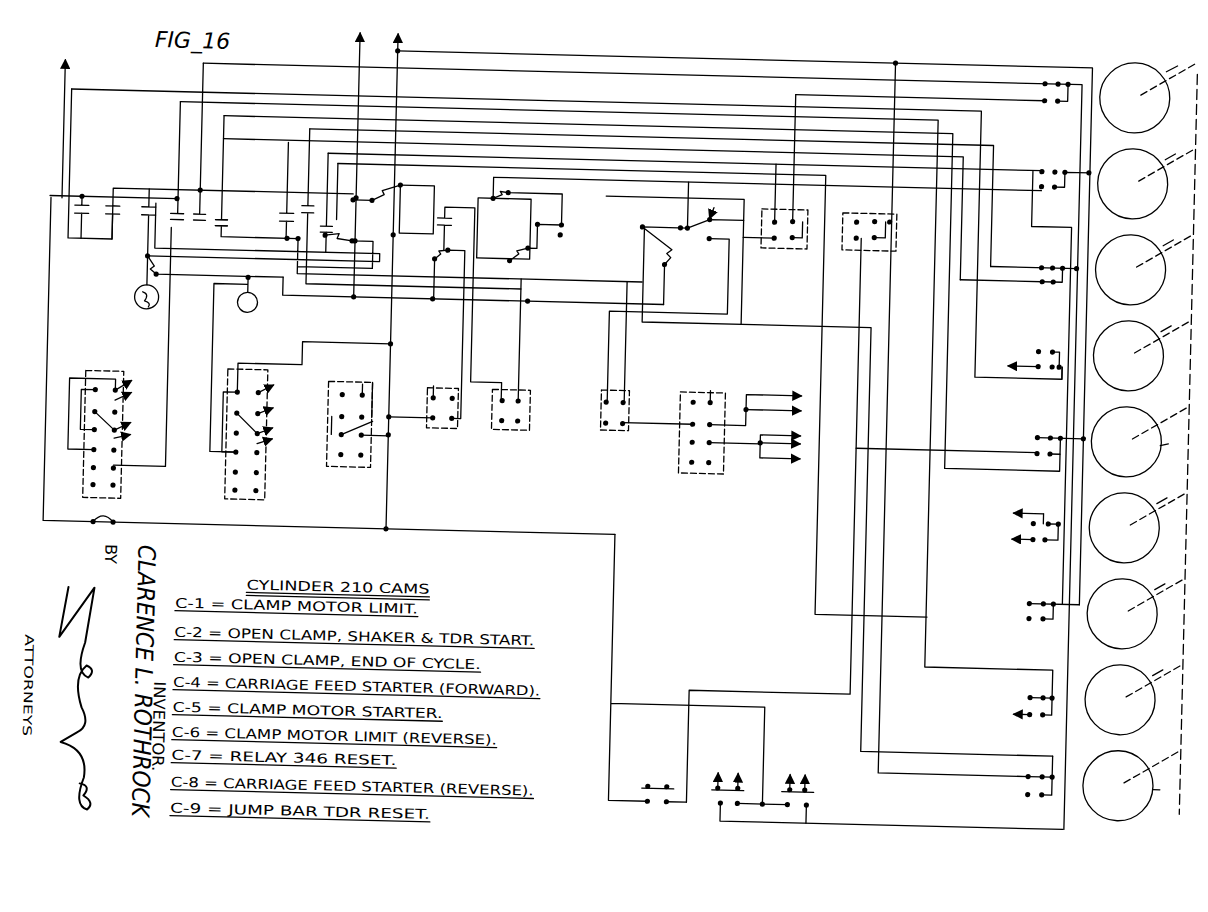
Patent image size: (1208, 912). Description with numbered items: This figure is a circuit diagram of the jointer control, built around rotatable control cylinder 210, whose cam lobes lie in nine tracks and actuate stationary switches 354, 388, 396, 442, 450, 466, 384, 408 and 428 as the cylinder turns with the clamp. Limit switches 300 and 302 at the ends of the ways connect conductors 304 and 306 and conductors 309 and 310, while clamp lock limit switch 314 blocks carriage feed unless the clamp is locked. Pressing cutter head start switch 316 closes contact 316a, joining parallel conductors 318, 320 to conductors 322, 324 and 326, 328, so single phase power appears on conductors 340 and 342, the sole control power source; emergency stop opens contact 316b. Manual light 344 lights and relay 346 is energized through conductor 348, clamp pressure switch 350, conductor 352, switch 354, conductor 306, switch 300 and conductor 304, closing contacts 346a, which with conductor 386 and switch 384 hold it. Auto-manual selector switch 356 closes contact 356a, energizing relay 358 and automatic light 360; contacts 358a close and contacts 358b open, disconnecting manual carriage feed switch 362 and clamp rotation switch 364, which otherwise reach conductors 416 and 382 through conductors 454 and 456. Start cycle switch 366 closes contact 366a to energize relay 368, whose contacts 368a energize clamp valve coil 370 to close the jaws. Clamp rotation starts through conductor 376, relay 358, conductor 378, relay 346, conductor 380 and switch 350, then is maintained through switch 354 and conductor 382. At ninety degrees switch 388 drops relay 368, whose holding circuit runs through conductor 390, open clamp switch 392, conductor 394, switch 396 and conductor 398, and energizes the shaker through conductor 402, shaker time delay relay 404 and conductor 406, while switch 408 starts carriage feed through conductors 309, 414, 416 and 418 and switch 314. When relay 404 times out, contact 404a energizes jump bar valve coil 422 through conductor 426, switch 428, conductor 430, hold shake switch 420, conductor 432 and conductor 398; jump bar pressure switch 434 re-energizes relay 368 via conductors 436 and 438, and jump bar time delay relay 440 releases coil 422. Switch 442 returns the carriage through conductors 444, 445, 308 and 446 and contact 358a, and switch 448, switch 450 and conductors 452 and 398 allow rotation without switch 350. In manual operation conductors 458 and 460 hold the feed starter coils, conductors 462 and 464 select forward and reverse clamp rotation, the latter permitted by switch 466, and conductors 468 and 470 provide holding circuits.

The control cylinder 210 is at (1188, 392).
The limit switch 300 is at (808, 770).
The limit switch 302 is at (722, 806).
The conductor 304 is at (630, 703).
The conductor 306 is at (1072, 125).
The conductor 308 is at (1022, 360).
The conductor 309 is at (708, 760).
The conductor 310 is at (752, 770).
The clamp lock limit switch 314 is at (118, 528).
The cutter head start switch 316 is at (706, 471).
The normally open contact 316a is at (709, 388).
The normally closed contact 316b is at (692, 441).
The parallel conductor 318 is at (750, 391).
The parallel conductor 320 is at (758, 391).
The parallel conductor 322 is at (786, 420).
The parallel conductor 324 is at (786, 436).
The parallel conductor 326 is at (786, 452).
The parallel conductor 328 is at (788, 458).
The conductor 340 is at (346, 48).
The conductor 342 is at (392, 52).
The manual light 344 is at (252, 318).
The relay 346 is at (342, 240).
The relay contacts 346a is at (281, 236).
The conductor 348 is at (550, 160).
The clamp pressure switch 350 is at (797, 244).
The conductor 352 is at (982, 92).
The cam-actuated switch 354 is at (1040, 70).
The auto-manual selector switch 356 is at (356, 472).
The selector switch contact 356a is at (359, 388).
The relay 358 is at (138, 288).
The relay contacts 358a is at (96, 200).
The relay contacts 358b is at (228, 230).
The automatic light 360 is at (130, 313).
The carriage feed switch 362 is at (122, 514).
The clamp rotation switch 364 is at (234, 508).
The start cycle switch 366 is at (452, 434).
The start cycle switch contact 366a is at (432, 392).
The relay 368 is at (428, 262).
The relay contacts 368a is at (430, 192).
The clamp valve coil 370 is at (380, 194).
The conductor 376 is at (58, 86).
The conductor 378 is at (235, 192).
The conductor 380 is at (530, 282).
The conductor 382 is at (614, 80).
The cam-actuated switch 384 is at (1030, 592).
The conductor 386 is at (640, 170).
The cam-actuated switch 388 is at (1040, 160).
The conductor 390 is at (469, 340).
The open clamp switch 392 is at (520, 432).
The conductor 394 is at (432, 136).
The cam-actuated switch 396 is at (1038, 256).
The conductor 398 is at (740, 56).
The conductor 402 is at (822, 176).
The shaker time delay relay 404 is at (637, 226).
The movable contact 404a is at (704, 220).
The conductor 406 is at (709, 204).
The cam-actuated switch 408 is at (1036, 686).
The conductor 414 is at (1022, 706).
The conductor 416 is at (534, 112).
The conductor 418 is at (45, 360).
The hold shake switch 420 is at (620, 436).
The jump bar valve coil 422 is at (492, 190).
The conductor 426 is at (598, 196).
The cam-actuated switch 428 is at (1032, 766).
The conductor 430 is at (730, 322).
The conductor 432 is at (664, 311).
The jump bar pressure switch 434 is at (878, 247).
The conductor 436 is at (596, 282).
The conductor 438 is at (884, 84).
The jump bar time delay relay 440 is at (505, 262).
The cam-actuated switch 442 is at (1036, 340).
The conductor 444 is at (790, 770).
The conductor 445 is at (816, 776).
The conductor 446 is at (63, 176).
The switch 448 is at (658, 782).
The cam-actuated switch 450 is at (1038, 426).
The conductor 452 is at (918, 444).
The conductor 454 is at (166, 348).
The conductor 456 is at (234, 374).
The conductor 458 is at (99, 434).
The conductor 460 is at (143, 419).
The conductor 462 is at (282, 400).
The conductor 464 is at (1044, 502).
The cam-actuated switch 466 is at (1034, 526).
The conductor 468 is at (279, 377).
The conductor 470 is at (281, 421).